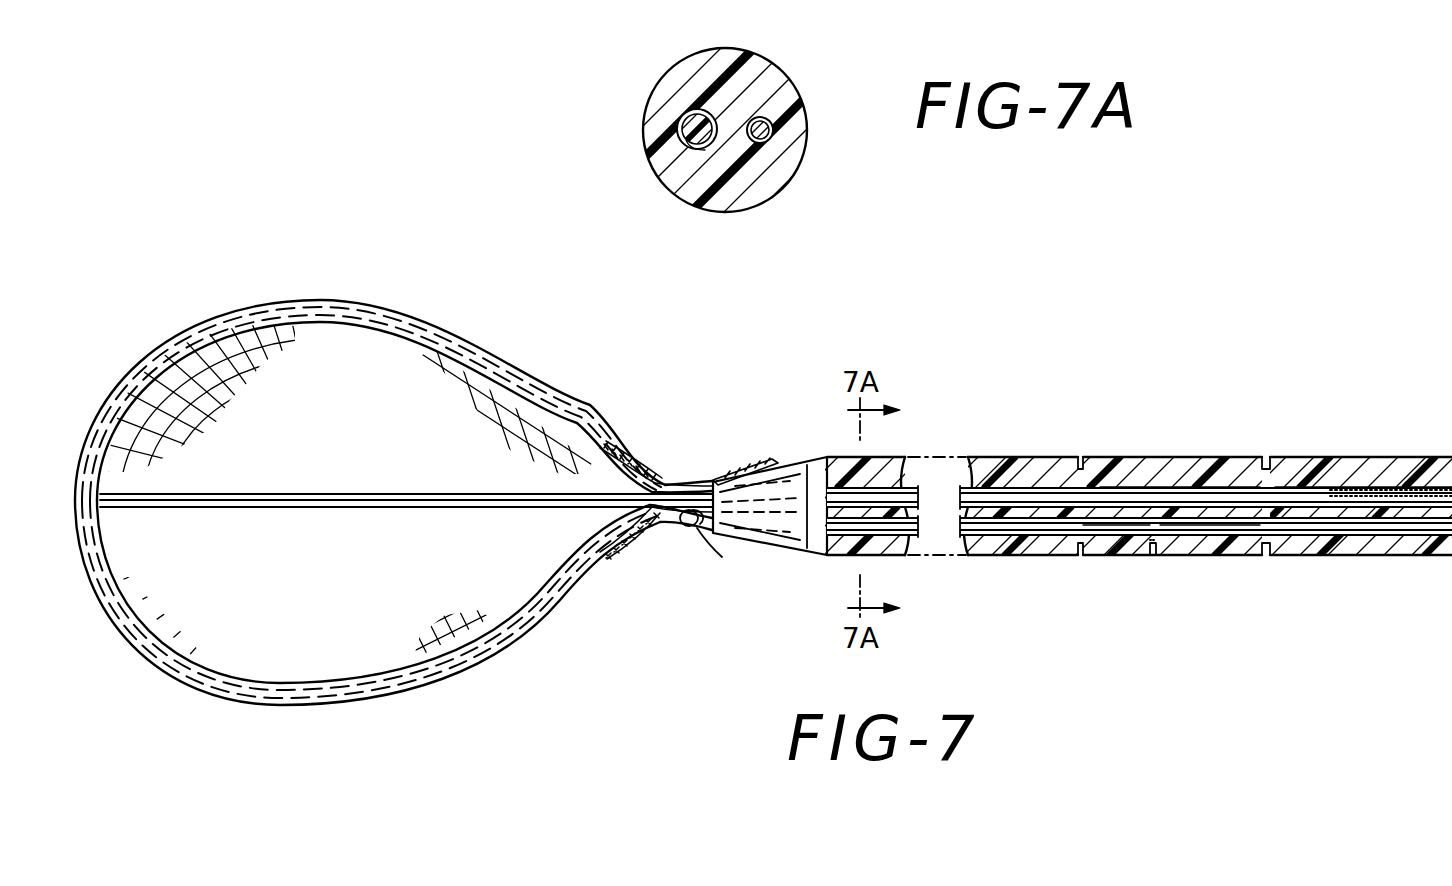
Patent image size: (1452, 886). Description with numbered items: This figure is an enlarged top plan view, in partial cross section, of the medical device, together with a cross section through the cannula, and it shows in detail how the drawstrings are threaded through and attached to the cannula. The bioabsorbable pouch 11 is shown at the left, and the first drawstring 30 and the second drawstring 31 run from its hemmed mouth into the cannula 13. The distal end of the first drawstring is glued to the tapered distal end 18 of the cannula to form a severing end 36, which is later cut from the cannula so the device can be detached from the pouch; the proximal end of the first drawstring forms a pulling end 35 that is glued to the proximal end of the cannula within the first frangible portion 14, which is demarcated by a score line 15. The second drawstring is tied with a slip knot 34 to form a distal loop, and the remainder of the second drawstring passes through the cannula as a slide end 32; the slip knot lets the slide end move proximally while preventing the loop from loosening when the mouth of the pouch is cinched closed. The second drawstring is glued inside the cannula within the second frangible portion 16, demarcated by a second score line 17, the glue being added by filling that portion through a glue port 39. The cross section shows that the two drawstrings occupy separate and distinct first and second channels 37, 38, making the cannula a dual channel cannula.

In FIG. 7, the bioabsorbable pouch 11 is at (316, 636).
In FIG. 7, the cannula 13 is at (1017, 458).
In FIG. 7A, the cannula 13 is at (735, 212).
In FIG. 7, the first frangible portion 14 is at (1385, 457).
In FIG. 7, the score line 15 is at (1265, 558).
In FIG. 7, the second frangible portion 16 is at (1175, 457).
In FIG. 7, the second score line 17 is at (1080, 560).
In FIG. 7, the tapered distal end 18 is at (782, 560).
In FIG. 7, the first drawstring 30 is at (437, 318).
In FIG. 7A, the first drawstring 30 is at (702, 150).
In FIG. 7, the second drawstring 31 is at (962, 540).
In FIG. 7A, the second drawstring 31 is at (768, 118).
In FIG. 7, the slide end 32 is at (1398, 558).
In FIG. 7, the slip knot 34 is at (678, 542).
In FIG. 7, the pulling end 35 is at (1335, 490).
In FIG. 7, the severing end 36 is at (727, 473).
In FIG. 7A, the first channel 37 is at (677, 122).
In FIG. 7A, the second channel 38 is at (773, 137).
In FIG. 7, the glue port 39 is at (1153, 558).